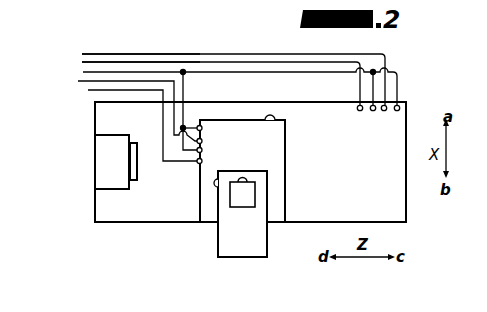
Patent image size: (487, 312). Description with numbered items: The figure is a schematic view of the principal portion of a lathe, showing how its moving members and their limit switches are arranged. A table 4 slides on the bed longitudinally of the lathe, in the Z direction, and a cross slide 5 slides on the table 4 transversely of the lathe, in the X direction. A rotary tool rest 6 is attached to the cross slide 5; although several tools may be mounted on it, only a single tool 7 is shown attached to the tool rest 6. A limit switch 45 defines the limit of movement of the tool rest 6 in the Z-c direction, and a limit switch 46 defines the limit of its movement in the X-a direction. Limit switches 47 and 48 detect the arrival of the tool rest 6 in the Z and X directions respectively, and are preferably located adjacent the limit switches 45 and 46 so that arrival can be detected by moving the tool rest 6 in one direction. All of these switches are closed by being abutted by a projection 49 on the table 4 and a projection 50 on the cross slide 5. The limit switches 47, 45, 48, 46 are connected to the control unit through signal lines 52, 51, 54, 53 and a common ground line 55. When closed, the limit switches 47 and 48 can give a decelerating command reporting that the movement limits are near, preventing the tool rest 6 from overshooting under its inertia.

The table 4 is at (285, 147).
The cross slide 5 is at (267, 246).
The rotary tool rest 6 is at (255, 200).
The tool 7 is at (246, 180).
The limit switch 45 is at (382, 111).
The limit switch 46 is at (203, 129).
The limit switch 47 is at (358, 111).
The limit switch 48 is at (203, 151).
The projection 49 is at (274, 113).
The projection 50 is at (213, 184).
The signal line 51 is at (223, 54).
The signal line 52 is at (250, 62).
The signal line 53 is at (80, 81).
The signal line 54 is at (88, 92).
The common ground line 55 is at (83, 72).